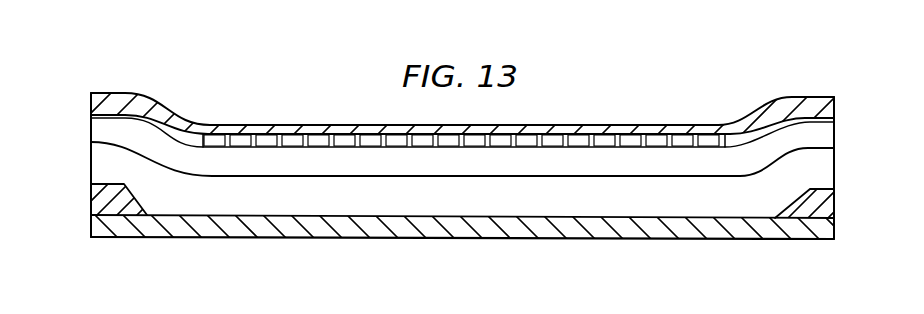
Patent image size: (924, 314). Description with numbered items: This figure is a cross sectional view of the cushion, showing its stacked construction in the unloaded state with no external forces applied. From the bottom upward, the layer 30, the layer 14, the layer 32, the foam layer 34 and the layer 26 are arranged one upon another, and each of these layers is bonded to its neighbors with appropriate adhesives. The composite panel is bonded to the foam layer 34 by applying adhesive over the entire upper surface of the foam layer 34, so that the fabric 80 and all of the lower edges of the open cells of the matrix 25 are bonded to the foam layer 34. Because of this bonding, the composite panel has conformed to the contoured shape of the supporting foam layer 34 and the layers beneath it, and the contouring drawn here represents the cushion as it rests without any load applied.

The layer 14 is at (91, 208).
The matrix 25 is at (322, 134).
The layer 26 is at (122, 93).
The layer 30 is at (91, 227).
The layer 32 is at (91, 165).
The foam layer 34 is at (91, 130).
The fabric 80 is at (834, 135).